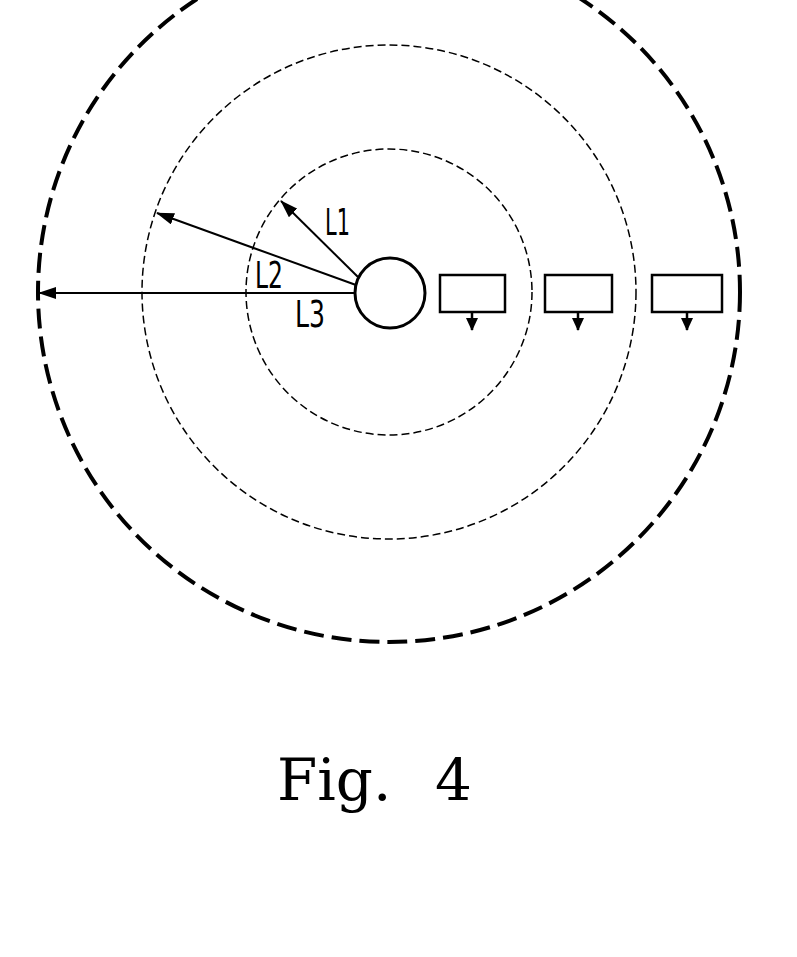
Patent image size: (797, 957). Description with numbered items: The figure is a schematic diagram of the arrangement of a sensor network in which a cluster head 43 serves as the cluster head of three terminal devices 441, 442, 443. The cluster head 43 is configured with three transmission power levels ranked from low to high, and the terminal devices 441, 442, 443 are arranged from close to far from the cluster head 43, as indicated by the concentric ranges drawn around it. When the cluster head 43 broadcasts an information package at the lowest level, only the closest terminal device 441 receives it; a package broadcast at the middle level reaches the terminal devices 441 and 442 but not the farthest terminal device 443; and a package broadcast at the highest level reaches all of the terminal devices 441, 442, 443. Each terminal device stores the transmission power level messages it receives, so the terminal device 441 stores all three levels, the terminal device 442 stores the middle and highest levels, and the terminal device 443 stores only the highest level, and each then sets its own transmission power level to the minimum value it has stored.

The cluster head 43 is at (390, 293).
The terminal device 441 is at (472, 340).
The terminal device 442 is at (578, 328).
The terminal device 443 is at (687, 314).